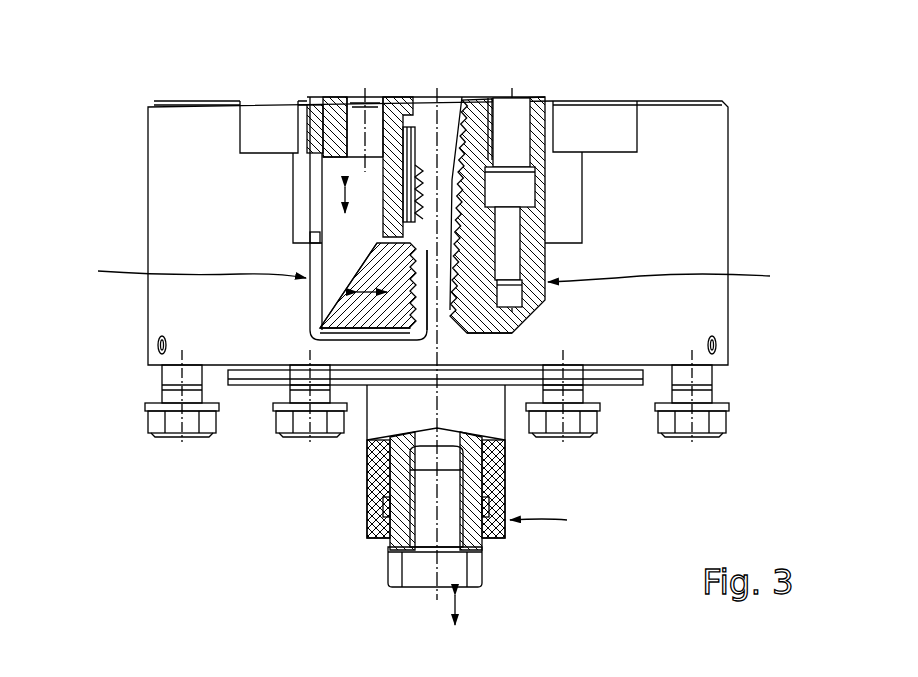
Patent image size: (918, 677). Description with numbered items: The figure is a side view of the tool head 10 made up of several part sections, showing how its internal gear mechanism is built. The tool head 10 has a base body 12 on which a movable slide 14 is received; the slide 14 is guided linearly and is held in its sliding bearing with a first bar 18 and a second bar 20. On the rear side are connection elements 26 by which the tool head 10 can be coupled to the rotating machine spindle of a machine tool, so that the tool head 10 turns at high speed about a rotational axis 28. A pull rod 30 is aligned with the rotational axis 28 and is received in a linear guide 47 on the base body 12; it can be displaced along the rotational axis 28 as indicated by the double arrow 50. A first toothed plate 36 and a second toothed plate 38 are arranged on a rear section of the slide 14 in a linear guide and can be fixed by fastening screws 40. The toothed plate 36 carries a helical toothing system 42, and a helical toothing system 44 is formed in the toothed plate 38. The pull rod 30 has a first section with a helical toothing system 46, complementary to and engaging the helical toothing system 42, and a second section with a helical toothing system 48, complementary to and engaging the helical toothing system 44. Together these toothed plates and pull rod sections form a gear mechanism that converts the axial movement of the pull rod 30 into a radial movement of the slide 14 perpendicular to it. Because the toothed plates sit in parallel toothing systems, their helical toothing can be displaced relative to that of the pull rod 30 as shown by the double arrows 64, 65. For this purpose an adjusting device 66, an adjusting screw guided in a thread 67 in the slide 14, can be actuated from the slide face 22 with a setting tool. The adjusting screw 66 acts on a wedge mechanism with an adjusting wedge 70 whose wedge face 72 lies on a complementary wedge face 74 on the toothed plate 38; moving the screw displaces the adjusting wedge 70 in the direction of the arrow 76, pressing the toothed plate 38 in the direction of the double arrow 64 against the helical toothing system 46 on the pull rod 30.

The tool head 10 is at (738, 92).
The base body 12 is at (163, 321).
The slide 14 is at (397, 97).
The first bar 18 is at (252, 115).
The second bar 20 is at (608, 115).
The slide face 22 is at (330, 97).
The connection elements 26 is at (156, 427).
The rotational axis 28 is at (430, 572).
The pull rod 30 is at (482, 553).
The first toothed plate 36 is at (507, 317).
The second toothed plate 38 is at (357, 333).
The fastening screws 40 is at (517, 225).
The helical toothing system 42 is at (474, 265).
The helical toothing system 44 is at (413, 301).
The helical toothing system 46 is at (462, 192).
The linear guide 47 is at (385, 495).
The helical toothing system 48 is at (422, 160).
The double arrow 50 is at (460, 612).
The double arrow 64 is at (320, 262).
The double arrow 65 is at (490, 338).
The adjusting device 66 is at (375, 97).
The thread 67 is at (341, 97).
The adjusting wedge 70 is at (333, 210).
The wedge face 72 is at (318, 302).
The wedge face 74 is at (357, 323).
The arrow 76 is at (307, 157).